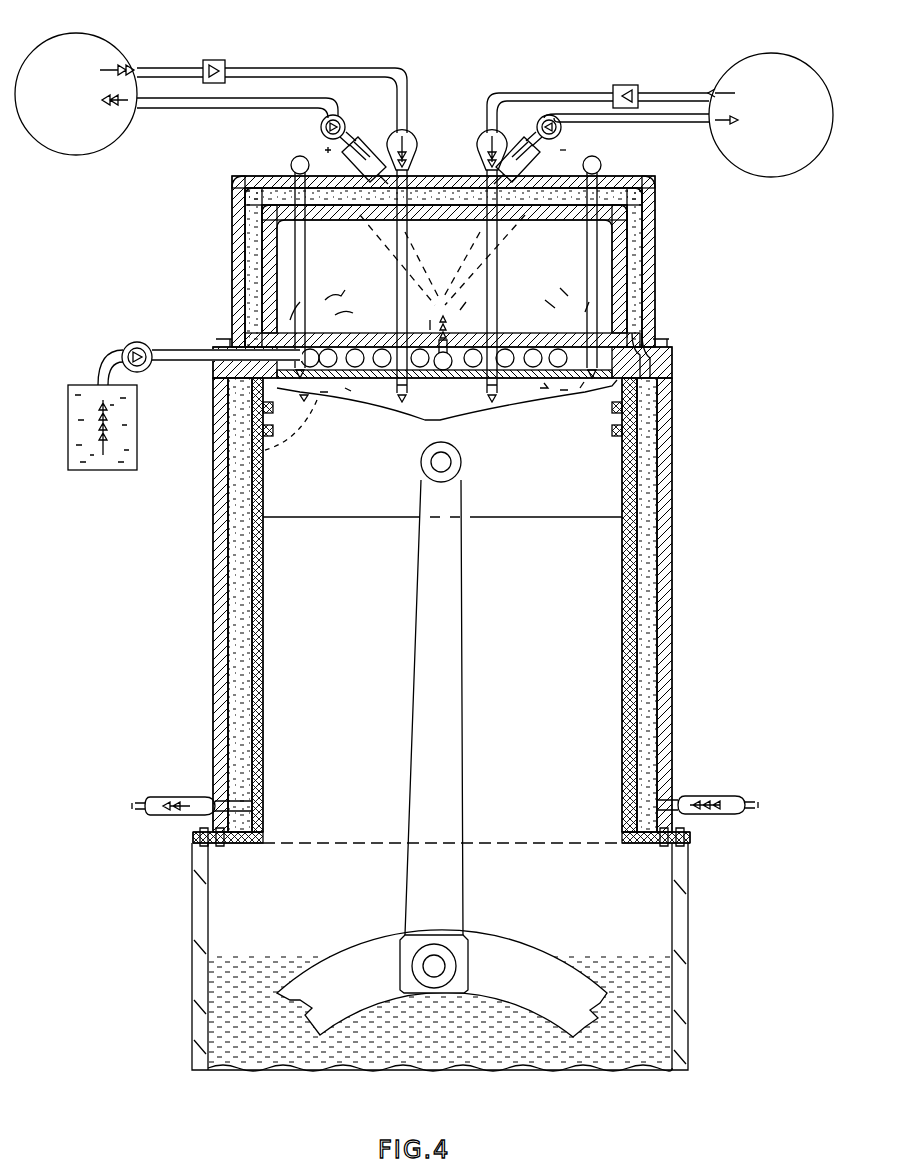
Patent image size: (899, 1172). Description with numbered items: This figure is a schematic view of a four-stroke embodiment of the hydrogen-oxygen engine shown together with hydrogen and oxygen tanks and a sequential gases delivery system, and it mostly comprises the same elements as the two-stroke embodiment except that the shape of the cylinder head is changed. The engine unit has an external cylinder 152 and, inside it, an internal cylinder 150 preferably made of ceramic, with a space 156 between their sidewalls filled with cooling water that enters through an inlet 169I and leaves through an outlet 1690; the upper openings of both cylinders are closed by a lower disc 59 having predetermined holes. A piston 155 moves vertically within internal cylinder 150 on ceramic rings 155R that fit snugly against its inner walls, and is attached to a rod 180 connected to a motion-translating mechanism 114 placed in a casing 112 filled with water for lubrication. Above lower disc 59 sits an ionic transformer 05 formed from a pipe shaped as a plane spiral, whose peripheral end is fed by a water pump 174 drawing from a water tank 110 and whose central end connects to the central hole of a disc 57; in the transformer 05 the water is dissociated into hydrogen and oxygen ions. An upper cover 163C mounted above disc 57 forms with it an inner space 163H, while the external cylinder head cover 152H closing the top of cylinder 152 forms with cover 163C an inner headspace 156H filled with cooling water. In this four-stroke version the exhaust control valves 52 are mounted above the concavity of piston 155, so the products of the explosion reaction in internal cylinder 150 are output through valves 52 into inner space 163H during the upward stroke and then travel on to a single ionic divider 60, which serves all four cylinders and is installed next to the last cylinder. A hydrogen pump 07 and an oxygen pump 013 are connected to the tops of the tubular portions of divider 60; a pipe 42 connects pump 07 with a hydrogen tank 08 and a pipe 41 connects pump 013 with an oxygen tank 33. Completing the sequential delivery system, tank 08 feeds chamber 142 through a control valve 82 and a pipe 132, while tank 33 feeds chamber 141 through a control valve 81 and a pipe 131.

The oxygen tank 33 is at (100, 42).
The control valve 81 is at (224, 60).
The pipe 131 is at (361, 66).
The pipe 41 is at (200, 107).
The oxygen pump 013 is at (320, 124).
The ionic divider 60 is at (340, 150).
The chamber 141 is at (410, 133).
The hydrogen tank 08 is at (793, 167).
The control valve 82 is at (630, 85).
The pipe 132 is at (509, 93).
The pipe 42 is at (652, 123).
The hydrogen pump 07 is at (583, 133).
The chamber 142 is at (477, 137).
The external cylinder head cover 152H is at (232, 208).
The inner space 163H is at (645, 237).
The inner headspace 156H is at (632, 259).
The upper cover 163C is at (620, 290).
The disc 57 is at (252, 328).
The ionic transformer 05 is at (672, 348).
The exhaust control valves 52 is at (675, 370).
The lower disc 59 is at (227, 415).
The water pump 174 is at (145, 342).
The water tank 110 is at (122, 470).
The internal cylinder 150 is at (642, 665).
The external cylinder 152 is at (650, 705).
The space 156 is at (630, 752).
The outlet 1690 is at (165, 803).
The inlet 169I is at (703, 803).
The casing 112 is at (190, 918).
The motion-translating mechanism 114 is at (550, 953).
The piston 155 is at (607, 507).
The ceramic rings 155R is at (647, 422).
The rod 180 is at (452, 872).